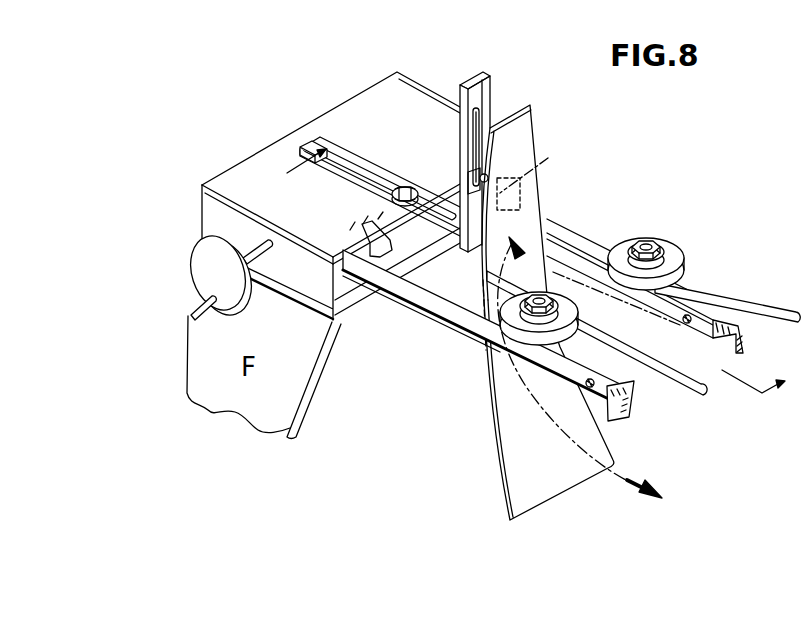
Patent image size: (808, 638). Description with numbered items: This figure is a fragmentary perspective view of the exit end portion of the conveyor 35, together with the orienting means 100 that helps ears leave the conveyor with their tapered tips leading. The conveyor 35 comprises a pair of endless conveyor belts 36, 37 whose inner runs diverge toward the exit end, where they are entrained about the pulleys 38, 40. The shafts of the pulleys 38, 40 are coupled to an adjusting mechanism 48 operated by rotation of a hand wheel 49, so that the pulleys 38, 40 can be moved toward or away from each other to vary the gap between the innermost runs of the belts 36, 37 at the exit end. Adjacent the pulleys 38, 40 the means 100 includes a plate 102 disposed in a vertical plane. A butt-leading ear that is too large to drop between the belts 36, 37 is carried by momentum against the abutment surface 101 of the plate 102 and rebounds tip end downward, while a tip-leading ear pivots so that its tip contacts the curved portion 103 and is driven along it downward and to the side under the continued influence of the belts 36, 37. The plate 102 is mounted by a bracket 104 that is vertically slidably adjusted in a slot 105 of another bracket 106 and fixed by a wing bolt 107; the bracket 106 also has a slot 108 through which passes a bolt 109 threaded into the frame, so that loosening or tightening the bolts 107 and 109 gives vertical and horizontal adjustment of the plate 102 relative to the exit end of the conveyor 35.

The conveyor 35 is at (714, 410).
The conveyor belt 36 is at (690, 316).
The conveyor belt 37 is at (684, 386).
The pulley 38 is at (672, 249).
The pulley 40 is at (518, 326).
The adjusting mechanism 48 is at (381, 97).
The hand wheel 49 is at (200, 258).
The orienting means 100 is at (594, 158).
The abutment surface 101 is at (546, 206).
The plate 102 is at (538, 133).
The curved portion 103 is at (545, 459).
The bracket 104 is at (538, 174).
The slot 105 is at (480, 110).
The bracket 106 is at (486, 76).
The wing bolt 107 is at (479, 179).
The slot 108 is at (366, 132).
The bolt 109 is at (406, 186).